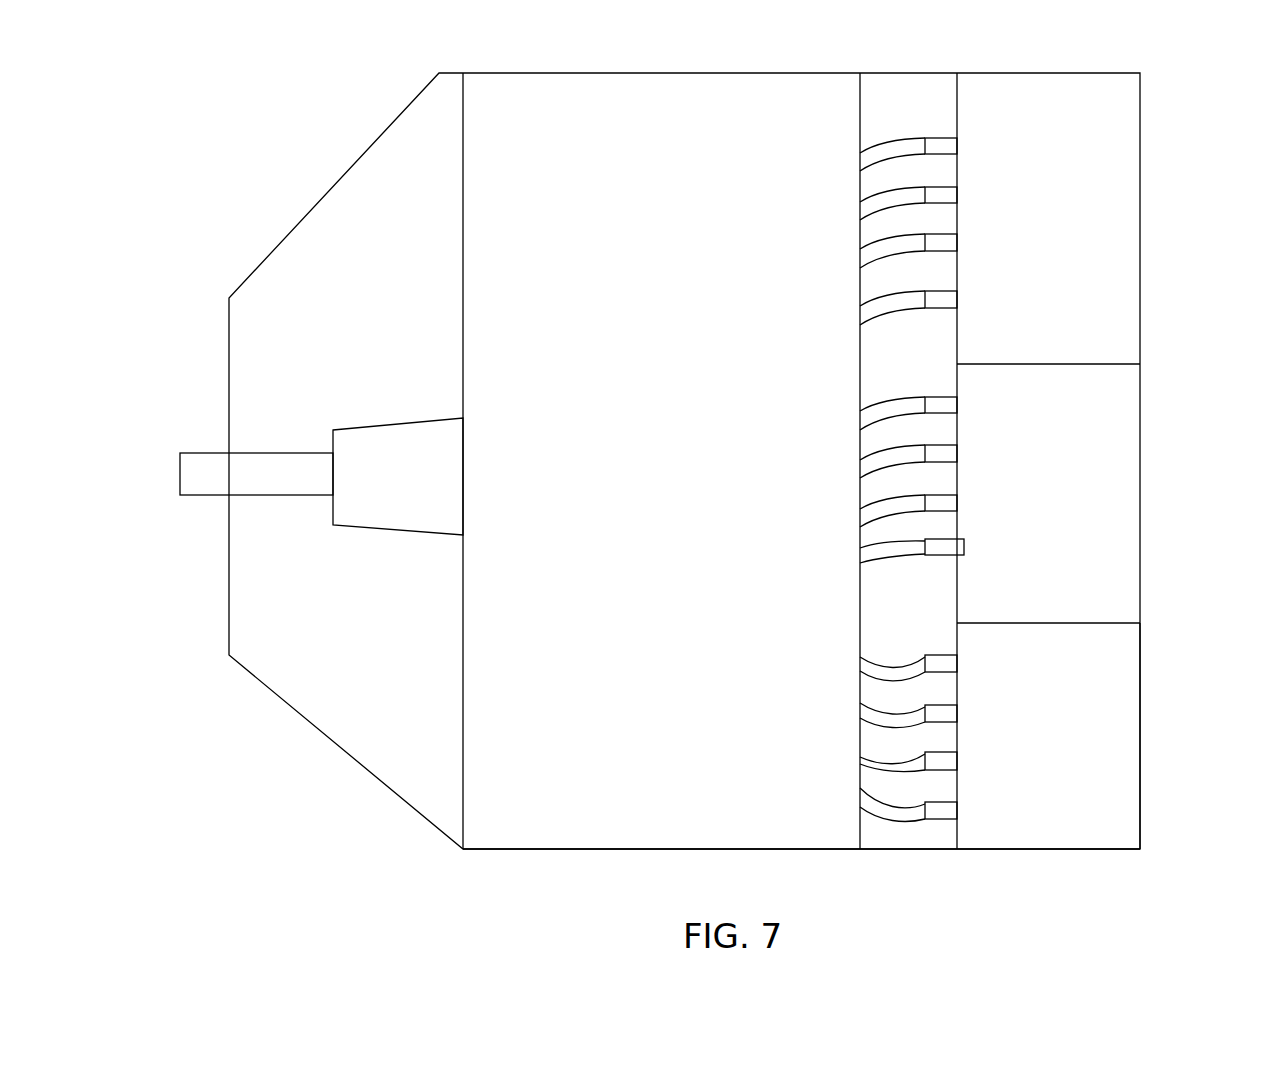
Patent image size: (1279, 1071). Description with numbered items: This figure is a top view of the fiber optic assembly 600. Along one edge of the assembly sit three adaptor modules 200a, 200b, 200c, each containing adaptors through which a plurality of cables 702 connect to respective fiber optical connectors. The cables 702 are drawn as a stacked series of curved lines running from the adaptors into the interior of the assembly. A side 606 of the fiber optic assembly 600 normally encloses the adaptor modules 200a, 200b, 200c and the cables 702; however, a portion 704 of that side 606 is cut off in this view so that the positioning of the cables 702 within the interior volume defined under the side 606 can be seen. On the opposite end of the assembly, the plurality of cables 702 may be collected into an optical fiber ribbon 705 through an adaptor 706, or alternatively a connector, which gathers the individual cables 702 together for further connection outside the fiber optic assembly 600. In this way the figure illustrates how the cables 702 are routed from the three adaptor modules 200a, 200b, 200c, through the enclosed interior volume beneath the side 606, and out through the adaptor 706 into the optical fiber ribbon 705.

The fiber optic assembly 600 is at (1171, 117).
The side 606 is at (738, 818).
The cables 702 is at (930, 138).
The portion 704 is at (912, 504).
The optical fiber ribbon 705 is at (246, 477).
The adaptor 706 is at (420, 473).
The adaptor module 200a is at (1114, 287).
The adaptor module 200b is at (1102, 535).
The adaptor module 200c is at (1119, 720).